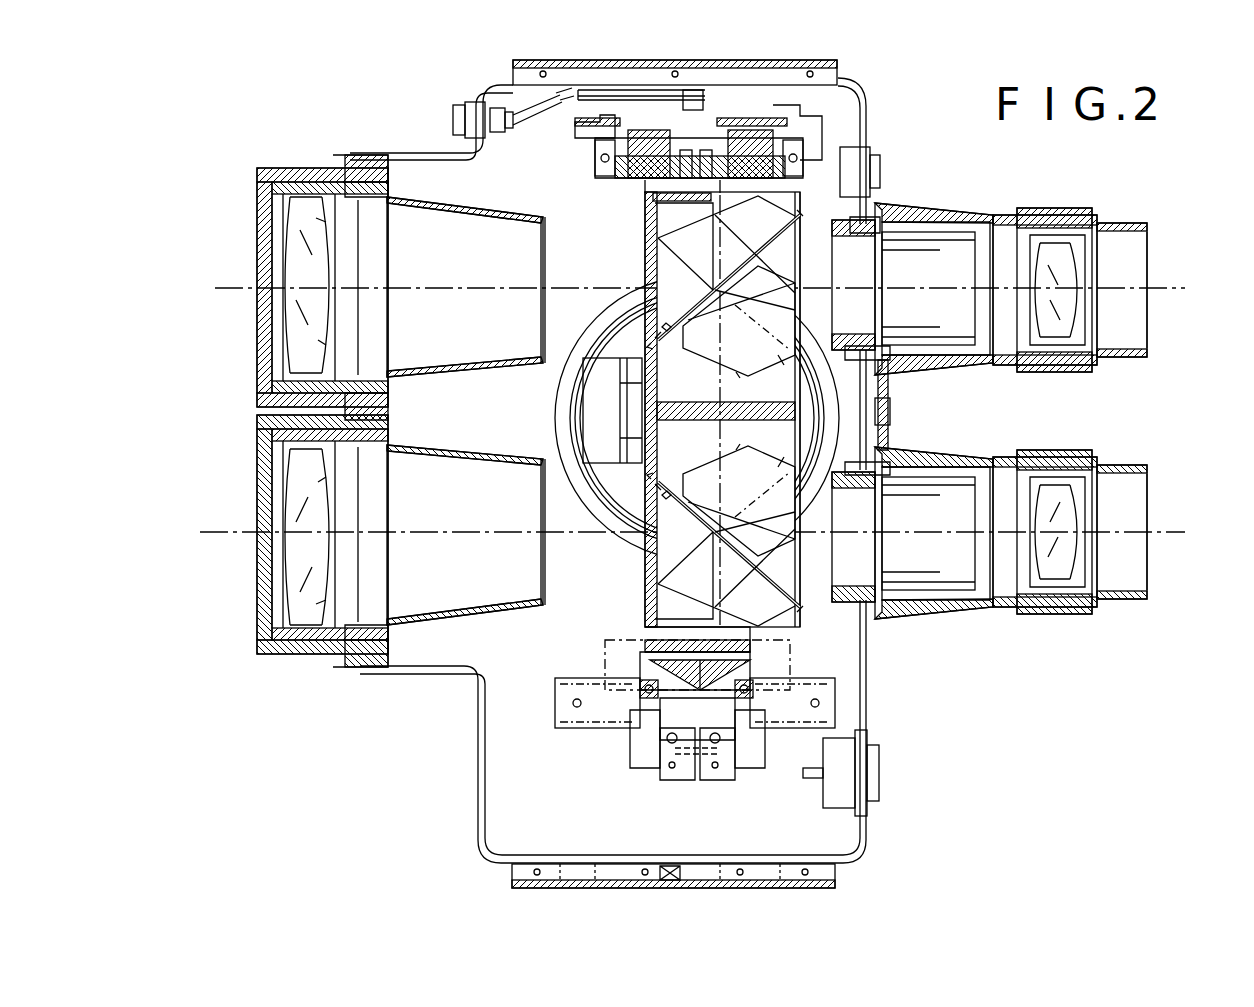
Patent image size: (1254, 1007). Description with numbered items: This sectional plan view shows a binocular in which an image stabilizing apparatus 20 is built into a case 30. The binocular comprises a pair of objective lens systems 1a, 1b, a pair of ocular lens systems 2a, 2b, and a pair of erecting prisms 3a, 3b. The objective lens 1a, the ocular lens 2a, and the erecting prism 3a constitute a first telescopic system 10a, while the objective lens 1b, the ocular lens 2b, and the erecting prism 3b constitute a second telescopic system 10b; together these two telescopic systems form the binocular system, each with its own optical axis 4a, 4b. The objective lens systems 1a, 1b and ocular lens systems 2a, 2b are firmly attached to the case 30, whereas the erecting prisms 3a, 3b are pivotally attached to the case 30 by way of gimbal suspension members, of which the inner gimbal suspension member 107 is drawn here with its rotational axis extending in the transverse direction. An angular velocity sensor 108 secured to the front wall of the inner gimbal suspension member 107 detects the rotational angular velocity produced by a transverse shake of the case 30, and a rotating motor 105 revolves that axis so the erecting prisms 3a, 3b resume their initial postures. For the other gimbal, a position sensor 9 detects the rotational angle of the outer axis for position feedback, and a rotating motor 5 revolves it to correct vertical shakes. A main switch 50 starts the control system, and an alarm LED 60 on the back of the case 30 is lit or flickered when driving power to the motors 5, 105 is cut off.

The objective lens system 1a is at (290, 157).
The objective lens system 1b is at (294, 660).
The ocular lens system 2a is at (1077, 215).
The ocular lens system 2b is at (1084, 606).
The erecting prism 3a is at (662, 255).
The erecting prism 3b is at (662, 552).
The upper optical axis 4a is at (238, 282).
The lower optical axis 4b is at (238, 538).
The rotating motor 5 is at (705, 120).
The position sensor 9 is at (641, 720).
The first telescopic system 10a is at (1178, 270).
The second telescopic system 10b is at (1162, 556).
The image stabilizing apparatus 20 is at (835, 120).
The case 30 is at (867, 845).
The main switch 50 is at (880, 768).
The alarm LED 60 is at (879, 165).
The rotating motor 105 is at (599, 509).
The inner gimbal suspension member 107 is at (645, 611).
The angular velocity sensor 108 is at (595, 400).